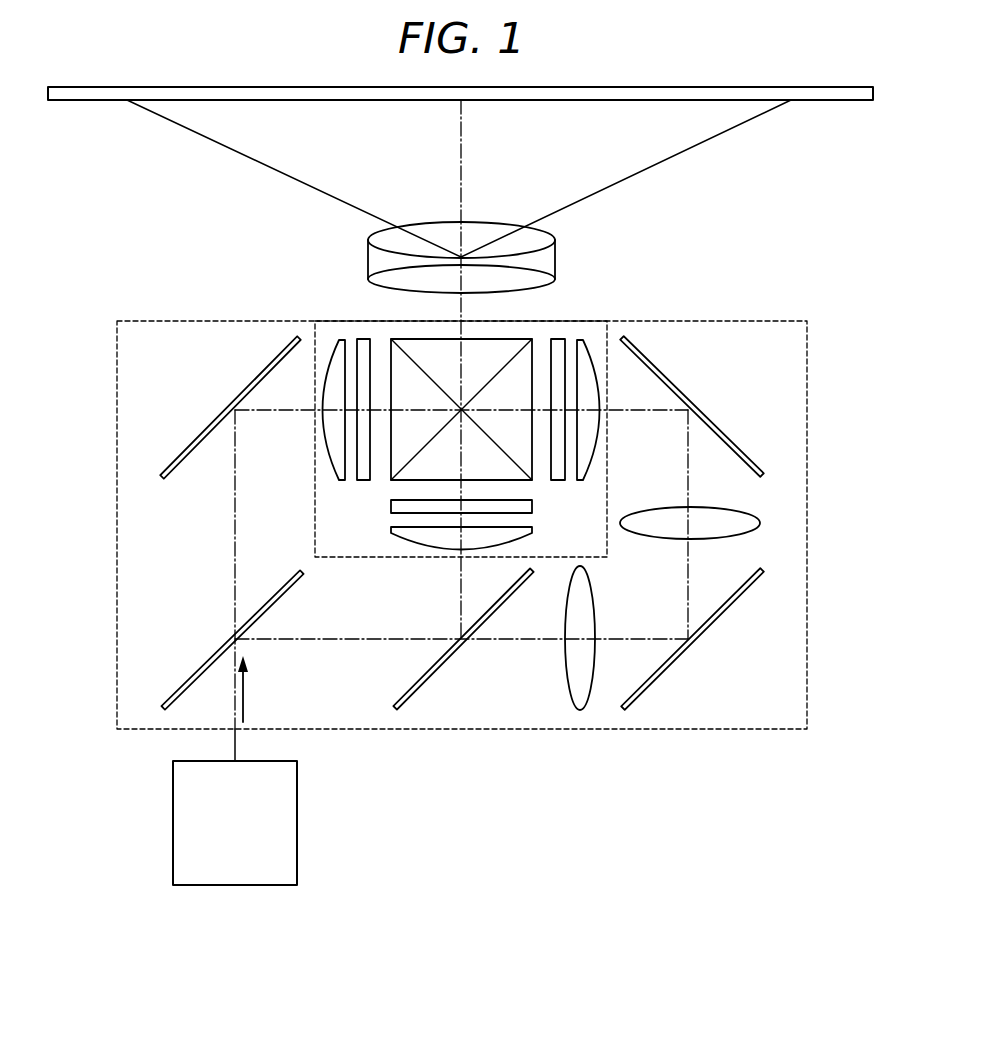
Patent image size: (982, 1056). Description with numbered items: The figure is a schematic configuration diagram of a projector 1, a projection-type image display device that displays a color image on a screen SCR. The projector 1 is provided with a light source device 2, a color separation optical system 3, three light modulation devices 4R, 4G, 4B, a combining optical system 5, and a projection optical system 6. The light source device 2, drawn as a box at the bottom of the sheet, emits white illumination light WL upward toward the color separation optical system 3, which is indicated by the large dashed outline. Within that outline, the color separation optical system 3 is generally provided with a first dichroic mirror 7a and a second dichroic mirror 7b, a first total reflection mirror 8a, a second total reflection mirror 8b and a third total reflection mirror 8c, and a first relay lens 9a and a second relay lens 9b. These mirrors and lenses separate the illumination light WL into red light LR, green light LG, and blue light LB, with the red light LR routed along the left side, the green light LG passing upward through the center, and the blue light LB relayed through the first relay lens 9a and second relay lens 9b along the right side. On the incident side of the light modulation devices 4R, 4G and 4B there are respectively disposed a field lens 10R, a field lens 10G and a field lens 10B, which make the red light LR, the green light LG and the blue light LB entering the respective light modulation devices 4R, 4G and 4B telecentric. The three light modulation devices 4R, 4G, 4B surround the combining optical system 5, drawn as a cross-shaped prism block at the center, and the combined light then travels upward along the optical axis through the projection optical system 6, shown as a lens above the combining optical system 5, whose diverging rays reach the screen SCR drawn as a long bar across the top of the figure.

The projector 1 is at (818, 290).
The light source device 2 is at (297, 855).
The color separation optical system 3 is at (117, 478).
The light modulation device 4R is at (360, 338).
The light modulation device 4G is at (393, 507).
The light modulation device 4B is at (560, 338).
The combining optical system 5 is at (487, 342).
The projection optical system 6 is at (440, 232).
The first dichroic mirror 7a is at (196, 672).
The second dichroic mirror 7b is at (440, 672).
The first total reflection mirror 8a is at (208, 428).
The second total reflection mirror 8b is at (718, 623).
The third total reflection mirror 8c is at (720, 426).
The first relay lens 9a is at (565, 661).
The second relay lens 9b is at (747, 513).
The field lens 10R is at (338, 338).
The field lens 10G is at (393, 529).
The field lens 10B is at (583, 338).
The screen SCR is at (839, 100).
The white illumination light WL is at (243, 707).
The red light LR is at (235, 547).
The green light LG is at (461, 592).
The blue light LB is at (688, 584).